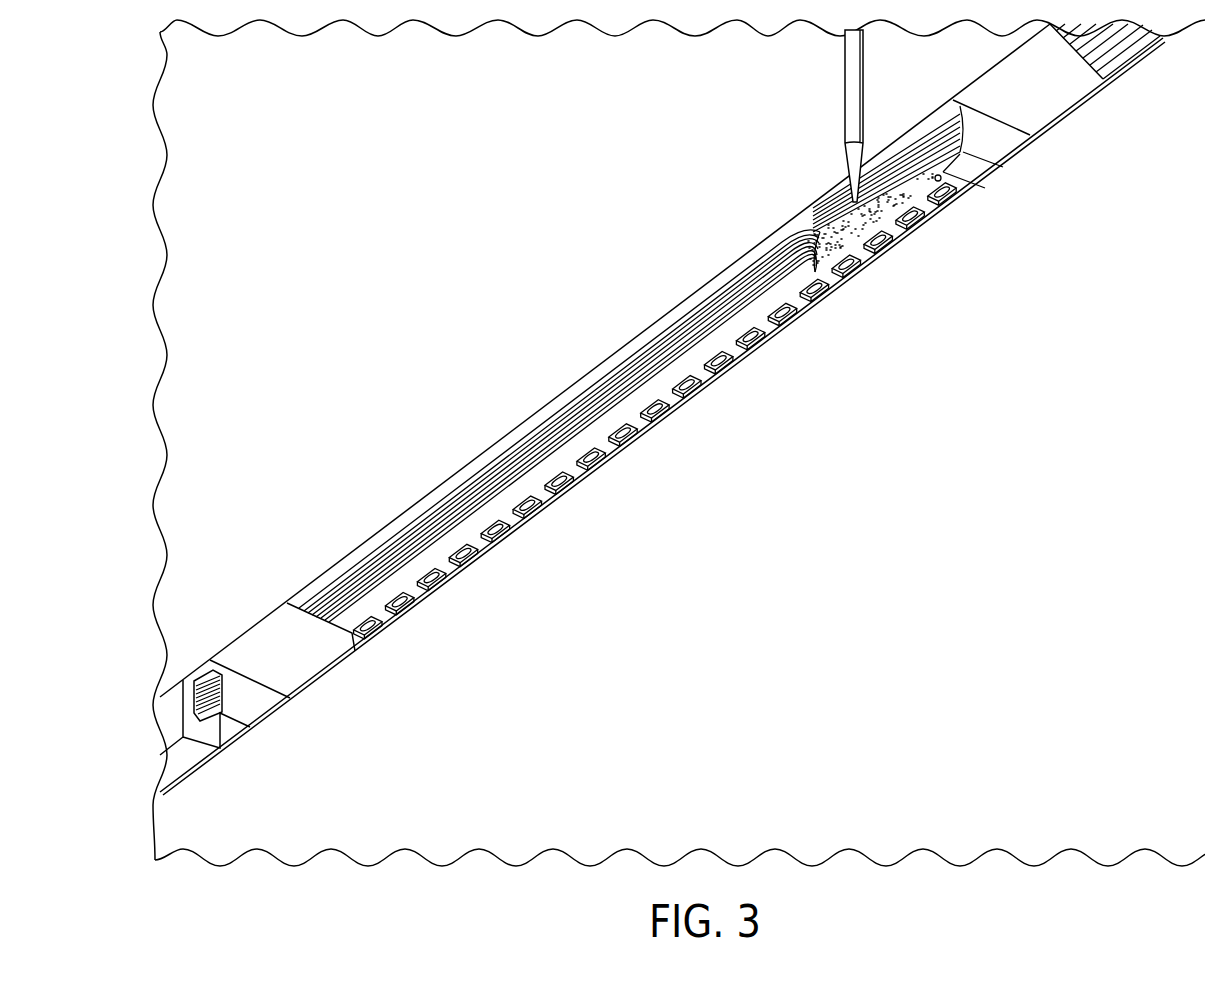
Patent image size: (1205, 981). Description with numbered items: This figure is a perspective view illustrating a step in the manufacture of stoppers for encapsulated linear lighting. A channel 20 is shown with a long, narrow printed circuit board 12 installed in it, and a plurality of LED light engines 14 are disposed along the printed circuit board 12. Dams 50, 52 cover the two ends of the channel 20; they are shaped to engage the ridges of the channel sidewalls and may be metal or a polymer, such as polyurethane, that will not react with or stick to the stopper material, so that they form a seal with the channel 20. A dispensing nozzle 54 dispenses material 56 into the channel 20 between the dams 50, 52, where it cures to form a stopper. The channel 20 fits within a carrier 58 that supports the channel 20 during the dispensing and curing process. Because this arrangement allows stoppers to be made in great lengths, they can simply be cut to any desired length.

The printed circuit board 12 is at (661, 386).
The LED light engines 14 is at (570, 485).
The channel 20 is at (395, 542).
The dam 50 is at (307, 651).
The dam 52 is at (1043, 98).
The dispensing nozzle 54 is at (848, 92).
The material 56 is at (818, 233).
The carrier 58 is at (218, 168).